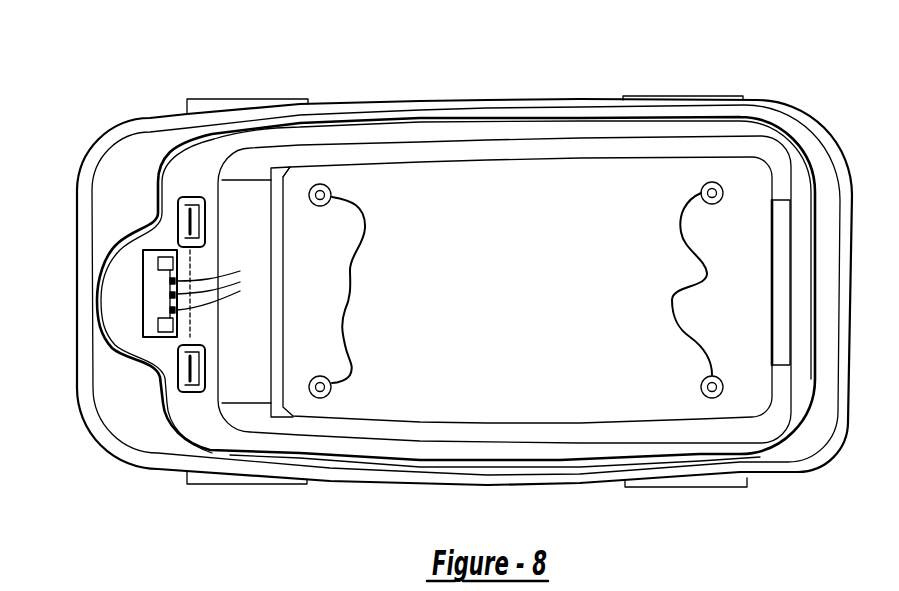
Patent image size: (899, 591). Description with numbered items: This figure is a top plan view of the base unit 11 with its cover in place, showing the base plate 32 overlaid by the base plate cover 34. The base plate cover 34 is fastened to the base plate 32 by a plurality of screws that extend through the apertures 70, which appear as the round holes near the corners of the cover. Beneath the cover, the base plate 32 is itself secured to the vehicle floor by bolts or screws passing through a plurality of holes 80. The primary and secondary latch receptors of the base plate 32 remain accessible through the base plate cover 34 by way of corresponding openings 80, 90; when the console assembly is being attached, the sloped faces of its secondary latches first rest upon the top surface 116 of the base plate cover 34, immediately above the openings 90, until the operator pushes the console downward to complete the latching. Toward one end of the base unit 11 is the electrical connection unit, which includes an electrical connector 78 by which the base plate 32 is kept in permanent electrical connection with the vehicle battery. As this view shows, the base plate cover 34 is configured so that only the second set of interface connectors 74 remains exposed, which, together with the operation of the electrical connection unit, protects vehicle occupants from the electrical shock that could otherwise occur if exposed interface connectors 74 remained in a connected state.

The base unit 11 is at (630, 505).
The base plate 32 is at (248, 485).
The base plate cover 34 is at (432, 384).
The apertures 70 is at (356, 283).
The second set of interface connectors 74 is at (217, 278).
The connector 78 is at (153, 297).
The holes 80 is at (780, 273).
The openings 90 is at (204, 221).
The top surface 116 is at (177, 169).